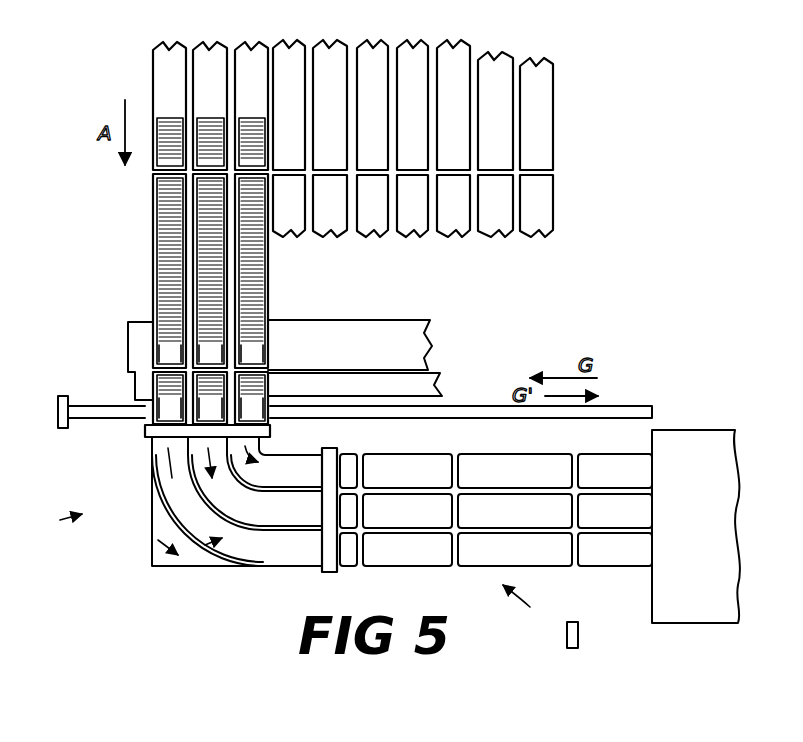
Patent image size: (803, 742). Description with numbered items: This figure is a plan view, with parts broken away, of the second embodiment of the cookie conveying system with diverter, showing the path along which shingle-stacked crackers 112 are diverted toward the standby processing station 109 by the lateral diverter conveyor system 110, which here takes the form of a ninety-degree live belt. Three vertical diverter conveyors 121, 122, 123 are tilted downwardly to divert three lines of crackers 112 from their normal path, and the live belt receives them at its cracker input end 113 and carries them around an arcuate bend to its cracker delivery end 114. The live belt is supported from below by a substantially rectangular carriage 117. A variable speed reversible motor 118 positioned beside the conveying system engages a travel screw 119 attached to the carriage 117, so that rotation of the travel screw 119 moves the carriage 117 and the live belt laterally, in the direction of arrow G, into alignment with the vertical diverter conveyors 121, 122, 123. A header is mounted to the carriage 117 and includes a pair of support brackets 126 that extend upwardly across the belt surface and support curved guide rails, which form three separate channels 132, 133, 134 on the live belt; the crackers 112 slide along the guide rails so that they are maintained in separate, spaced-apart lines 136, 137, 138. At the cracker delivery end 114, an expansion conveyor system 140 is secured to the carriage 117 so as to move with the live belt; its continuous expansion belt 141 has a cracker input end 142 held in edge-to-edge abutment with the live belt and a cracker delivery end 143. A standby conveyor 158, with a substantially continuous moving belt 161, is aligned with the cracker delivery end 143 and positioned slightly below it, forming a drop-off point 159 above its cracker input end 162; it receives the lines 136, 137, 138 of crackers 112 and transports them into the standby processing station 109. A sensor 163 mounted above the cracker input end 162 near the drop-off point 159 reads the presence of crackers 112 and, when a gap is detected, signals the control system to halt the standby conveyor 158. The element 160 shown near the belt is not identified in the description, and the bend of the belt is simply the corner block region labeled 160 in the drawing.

The standby processing station 109 is at (706, 533).
The lateral diverter conveyor system 110 is at (51, 520).
The crackers 112 is at (165, 160).
The cracker input end 113 is at (132, 373).
The cracker delivery end 114 is at (362, 568).
The carriage 117 is at (150, 535).
The variable speed reversible motor 118 is at (60, 430).
The travel screw 119 is at (108, 419).
The vertical diverter conveyor 121 is at (262, 252).
The vertical diverter conveyor 122 is at (205, 237).
The vertical diverter conveyor 123 is at (155, 263).
The support brackets 126 is at (150, 455).
The channel 132 is at (286, 470).
The channel 133 is at (292, 512).
The channel 134 is at (200, 580).
The line of crackers 136 is at (268, 313).
The line of crackers 137 is at (230, 236).
The line of crackers 138 is at (160, 303).
The expansion conveyor system 140 is at (535, 600).
The expansion belt 141 is at (545, 547).
The cracker input end 142 is at (372, 548).
The cracker delivery end 143 is at (552, 470).
The standby conveyor 158 is at (616, 550).
The drop-off point 159 is at (577, 450).
The elbow corner block 160 is at (156, 560).
The moving belt 161 is at (640, 566).
The cracker input end 162 is at (582, 478).
The sensor 163 is at (578, 640).